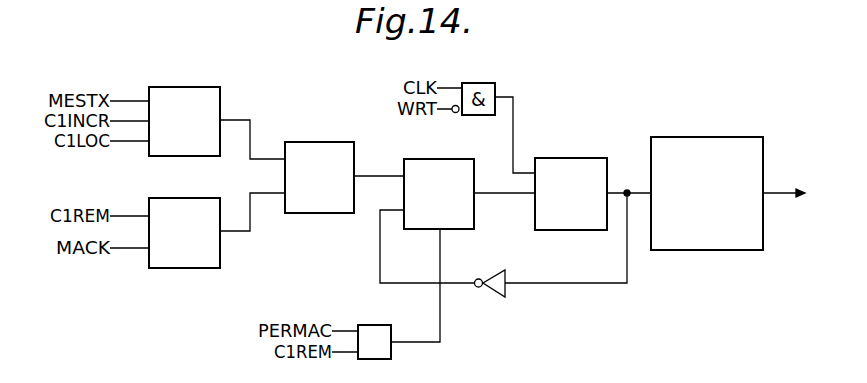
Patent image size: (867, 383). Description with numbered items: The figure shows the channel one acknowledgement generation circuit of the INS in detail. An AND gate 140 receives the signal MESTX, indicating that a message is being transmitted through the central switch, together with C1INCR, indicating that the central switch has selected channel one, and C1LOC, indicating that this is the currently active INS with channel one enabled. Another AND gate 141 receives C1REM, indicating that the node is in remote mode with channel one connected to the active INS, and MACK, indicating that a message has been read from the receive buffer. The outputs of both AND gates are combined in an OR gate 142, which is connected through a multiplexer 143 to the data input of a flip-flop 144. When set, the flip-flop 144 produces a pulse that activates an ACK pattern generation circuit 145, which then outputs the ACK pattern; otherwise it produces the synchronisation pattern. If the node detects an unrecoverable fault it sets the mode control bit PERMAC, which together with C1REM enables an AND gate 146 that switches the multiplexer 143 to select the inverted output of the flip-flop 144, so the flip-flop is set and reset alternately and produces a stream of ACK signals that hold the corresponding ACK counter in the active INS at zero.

The AND gate 140 is at (223, 93).
The AND gate 141 is at (223, 269).
The OR gate 142 is at (325, 140).
The multiplexer 143 is at (458, 157).
The flip-flop 144 is at (572, 157).
The ACK pattern generation circuit 145 is at (717, 135).
The AND gate 146 is at (375, 323).